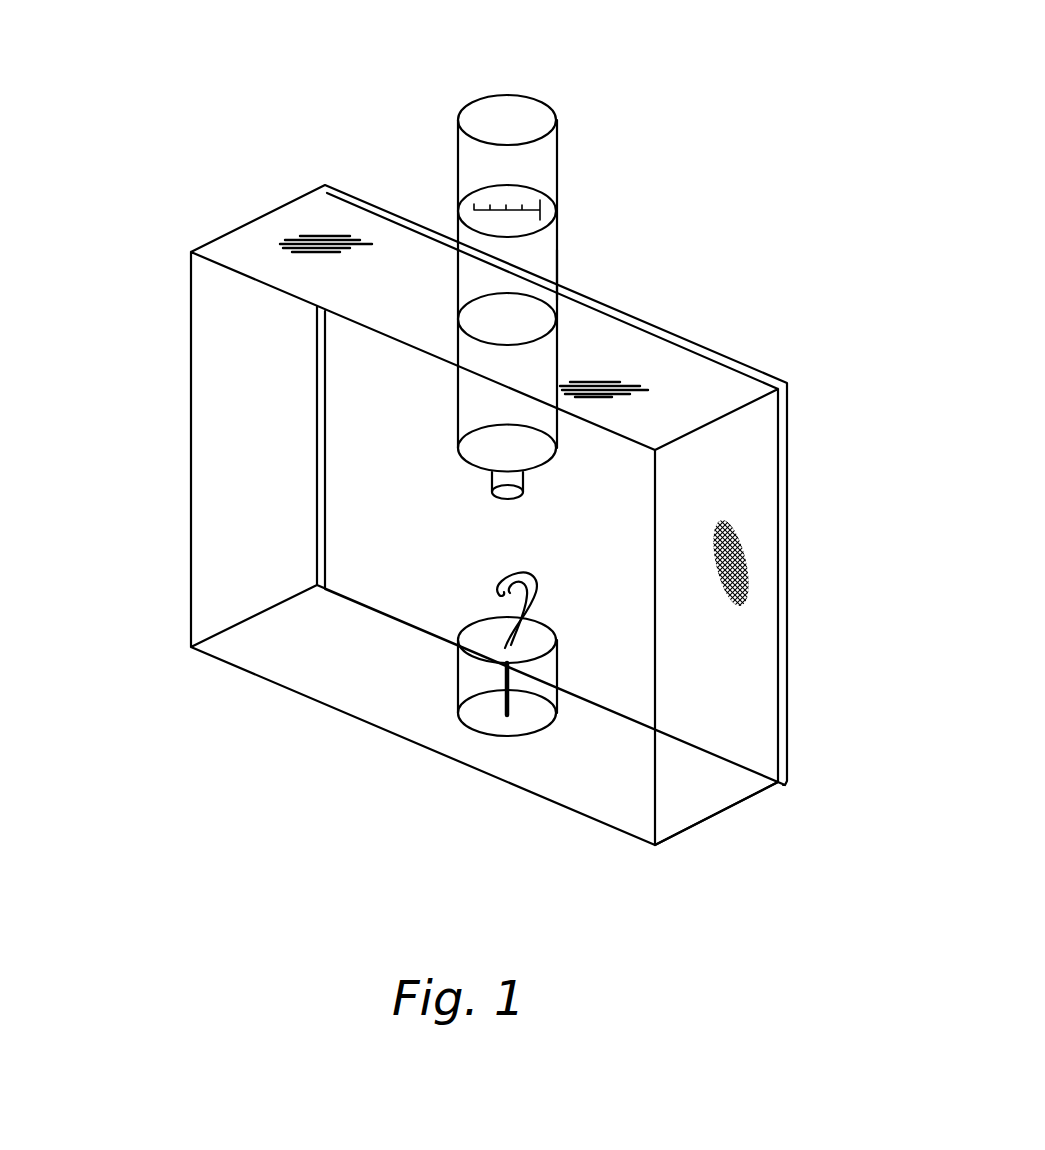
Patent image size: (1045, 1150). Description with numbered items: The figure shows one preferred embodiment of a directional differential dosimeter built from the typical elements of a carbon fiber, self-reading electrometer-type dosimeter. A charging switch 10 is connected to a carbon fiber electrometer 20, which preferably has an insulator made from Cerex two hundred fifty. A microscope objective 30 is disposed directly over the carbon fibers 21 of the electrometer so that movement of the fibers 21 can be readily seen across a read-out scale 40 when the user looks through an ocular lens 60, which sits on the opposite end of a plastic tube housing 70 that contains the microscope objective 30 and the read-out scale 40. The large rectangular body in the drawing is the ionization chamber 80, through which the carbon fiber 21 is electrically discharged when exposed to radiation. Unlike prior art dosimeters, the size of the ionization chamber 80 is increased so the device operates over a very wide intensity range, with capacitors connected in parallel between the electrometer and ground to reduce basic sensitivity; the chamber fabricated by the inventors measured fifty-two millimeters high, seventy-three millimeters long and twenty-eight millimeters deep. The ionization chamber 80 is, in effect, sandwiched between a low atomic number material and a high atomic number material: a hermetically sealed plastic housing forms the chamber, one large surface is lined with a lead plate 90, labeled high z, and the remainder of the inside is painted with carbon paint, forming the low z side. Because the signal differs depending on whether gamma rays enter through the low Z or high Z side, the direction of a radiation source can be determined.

The charging switch 10 is at (513, 703).
The carbon fiber electrometer 20 is at (457, 682).
The carbon fibers 21 is at (473, 598).
The microscope objective 30 is at (523, 492).
The read-out scale 40 is at (540, 208).
The ocular lens 60 is at (538, 98).
The plastic tube housing 70 is at (558, 270).
The ionization chamber 80 is at (705, 780).
The lead plate 90 is at (721, 358).